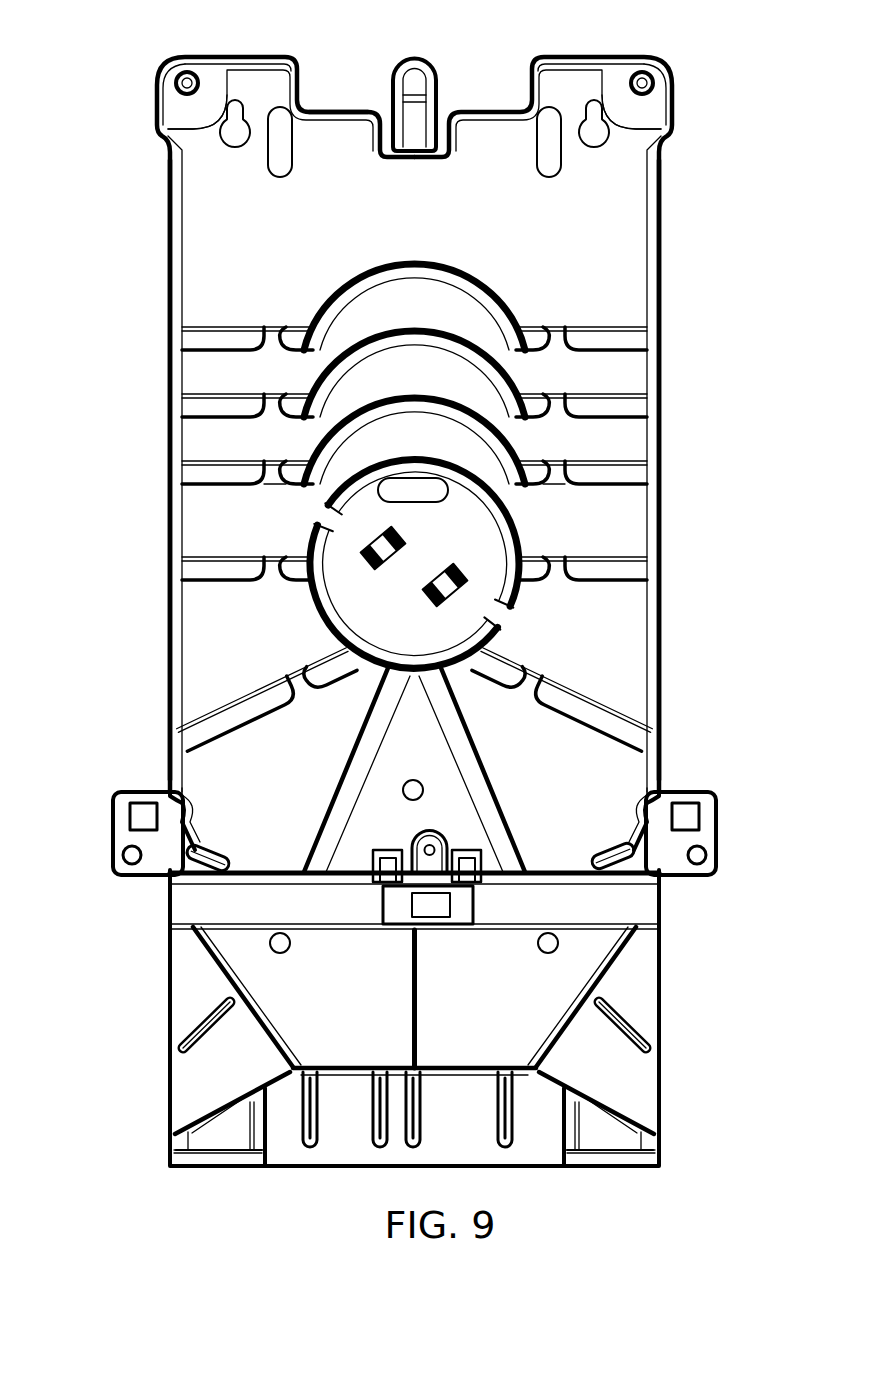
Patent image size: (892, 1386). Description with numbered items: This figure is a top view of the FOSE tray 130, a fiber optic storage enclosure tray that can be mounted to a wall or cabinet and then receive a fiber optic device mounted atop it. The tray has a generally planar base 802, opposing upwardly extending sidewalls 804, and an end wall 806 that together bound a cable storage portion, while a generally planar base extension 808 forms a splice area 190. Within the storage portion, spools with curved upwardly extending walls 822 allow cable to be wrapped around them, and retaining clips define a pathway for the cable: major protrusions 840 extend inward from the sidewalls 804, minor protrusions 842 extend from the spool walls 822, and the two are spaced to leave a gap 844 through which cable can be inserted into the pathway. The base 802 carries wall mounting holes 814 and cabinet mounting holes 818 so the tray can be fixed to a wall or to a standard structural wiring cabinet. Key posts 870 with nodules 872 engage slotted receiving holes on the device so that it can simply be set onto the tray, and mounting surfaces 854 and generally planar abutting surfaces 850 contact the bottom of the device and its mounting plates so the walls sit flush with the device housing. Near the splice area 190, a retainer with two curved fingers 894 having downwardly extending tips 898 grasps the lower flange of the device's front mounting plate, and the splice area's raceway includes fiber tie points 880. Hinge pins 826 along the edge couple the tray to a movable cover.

The FOSE tray 130 is at (104, 222).
The splice area 190 is at (205, 1069).
The base 802 is at (500, 153).
The sidewalls 804 is at (170, 525).
The end wall 806 is at (343, 110).
The base extension 808 is at (648, 990).
The wall mounting holes 814 is at (238, 148).
The cabinet mounting holes 818 is at (287, 150).
The curved upwardly extending walls 822 is at (382, 677).
The hinge pins 826 is at (600, 1152).
The major protrusions 840 is at (228, 705).
The minor protrusions 842 is at (323, 653).
The gap 844 is at (555, 481).
The abutting surfaces 850 is at (446, 563).
The mounting surfaces 854 is at (175, 110).
The key posts 870 is at (186, 74).
The nodules 872 is at (175, 95).
The fiber tie points 880 is at (497, 1138).
The curved fingers 894 is at (462, 857).
The downwardly extending tips 898 is at (408, 838).